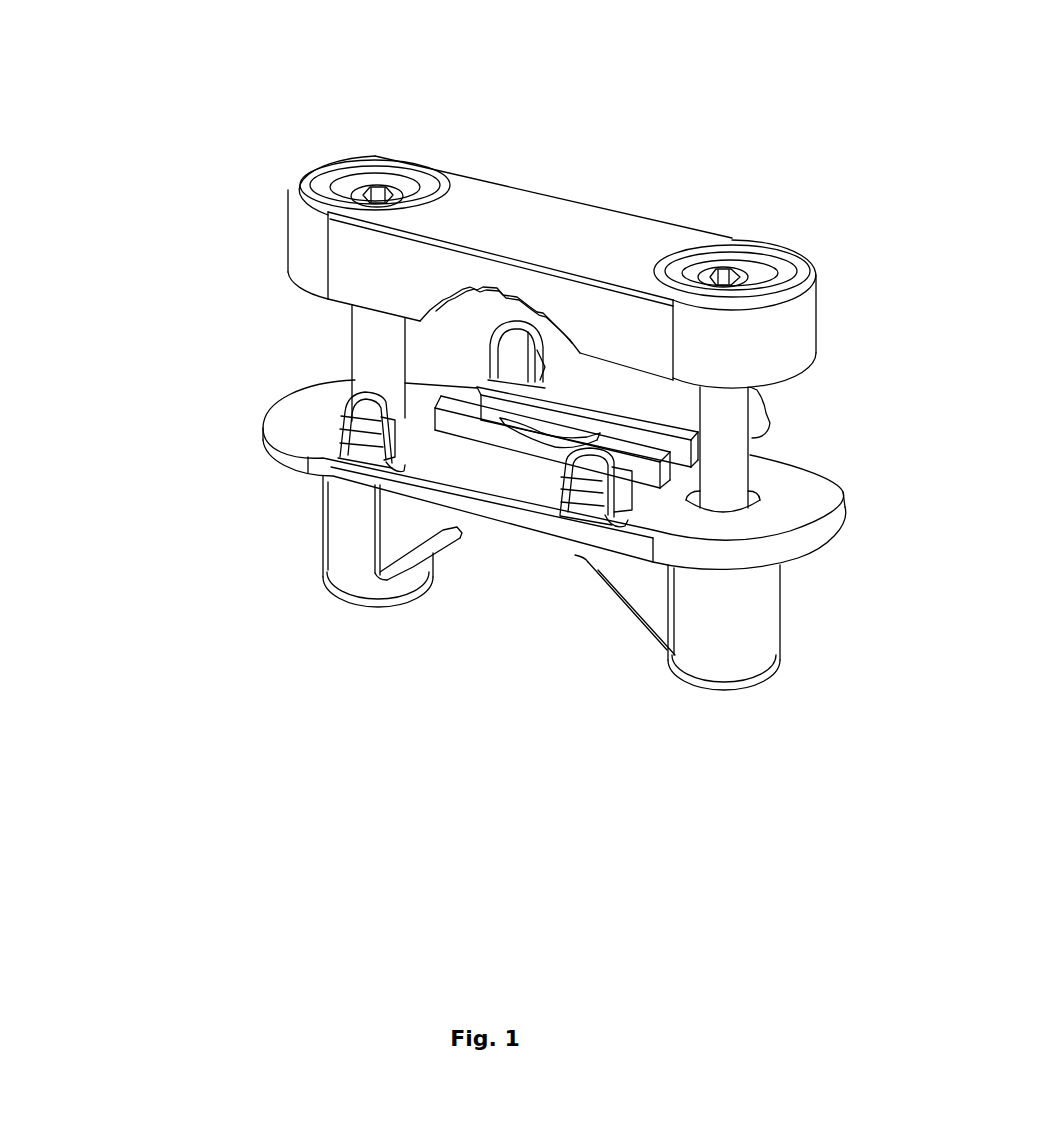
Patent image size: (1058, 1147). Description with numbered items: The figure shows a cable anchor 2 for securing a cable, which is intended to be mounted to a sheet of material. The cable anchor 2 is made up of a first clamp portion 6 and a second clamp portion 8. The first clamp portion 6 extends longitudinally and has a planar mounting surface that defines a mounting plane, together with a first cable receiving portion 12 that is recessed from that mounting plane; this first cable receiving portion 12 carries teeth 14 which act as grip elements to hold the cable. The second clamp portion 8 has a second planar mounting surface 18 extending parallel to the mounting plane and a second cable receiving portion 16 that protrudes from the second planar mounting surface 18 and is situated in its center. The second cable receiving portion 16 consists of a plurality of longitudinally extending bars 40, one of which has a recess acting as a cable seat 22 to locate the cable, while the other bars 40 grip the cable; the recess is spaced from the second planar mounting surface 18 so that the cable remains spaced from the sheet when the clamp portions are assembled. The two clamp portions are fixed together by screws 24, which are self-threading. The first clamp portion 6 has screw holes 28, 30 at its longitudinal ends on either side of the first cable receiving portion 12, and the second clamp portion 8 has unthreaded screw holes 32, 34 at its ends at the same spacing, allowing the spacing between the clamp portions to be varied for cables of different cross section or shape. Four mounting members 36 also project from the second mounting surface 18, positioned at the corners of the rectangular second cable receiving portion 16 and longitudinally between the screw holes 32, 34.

The cable anchor 2 is at (316, 104).
The first clamp portion 6 is at (622, 245).
The second clamp portion 8 is at (716, 621).
The first cable receiving portion 12 is at (430, 303).
The teeth 14 is at (567, 341).
The second cable receiving portion 16 is at (480, 443).
The second planar mounting surface 18 is at (302, 418).
The cable seat 22 is at (541, 437).
The screws 24 is at (732, 272).
The screw hole 28 is at (763, 259).
The screw hole 30 is at (420, 183).
The screw hole 32 is at (740, 506).
The screw hole 34 is at (393, 407).
The mounting members 36 is at (343, 455).
The bars 40 is at (433, 439).